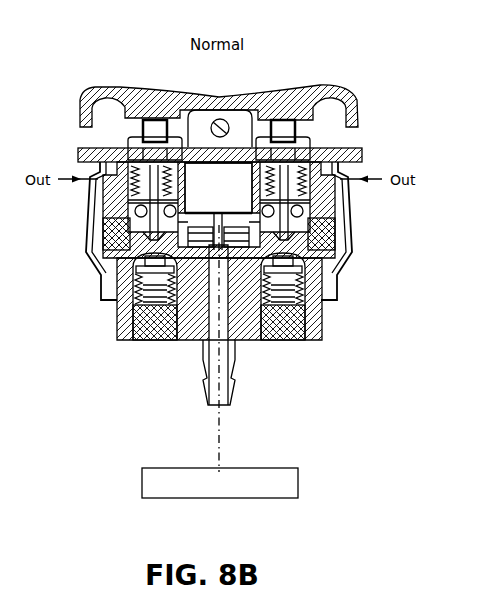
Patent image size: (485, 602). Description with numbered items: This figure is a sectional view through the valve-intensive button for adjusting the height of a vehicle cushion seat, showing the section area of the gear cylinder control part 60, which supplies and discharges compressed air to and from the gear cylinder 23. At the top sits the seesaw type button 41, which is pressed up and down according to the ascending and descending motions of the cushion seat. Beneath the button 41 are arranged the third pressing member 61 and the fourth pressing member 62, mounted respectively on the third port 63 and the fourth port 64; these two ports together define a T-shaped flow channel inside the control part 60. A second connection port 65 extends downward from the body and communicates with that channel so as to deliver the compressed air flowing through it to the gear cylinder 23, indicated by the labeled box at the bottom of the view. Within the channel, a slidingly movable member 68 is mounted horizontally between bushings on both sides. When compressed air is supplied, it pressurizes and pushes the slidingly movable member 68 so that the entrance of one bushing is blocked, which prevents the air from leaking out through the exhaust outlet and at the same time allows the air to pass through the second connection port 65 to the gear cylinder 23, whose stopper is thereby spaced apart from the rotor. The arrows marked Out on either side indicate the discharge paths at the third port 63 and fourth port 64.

The gear cylinder control part 60 is at (294, 67).
The seesaw type button 41 is at (150, 98).
The third pressing member 61 is at (143, 130).
The fourth pressing member 62 is at (295, 131).
The third port 63 is at (113, 277).
The fourth port 64 is at (333, 275).
The second connection port 65 is at (203, 370).
The slidingly movable member 68 is at (205, 213).
The gear cylinder 23 is at (220, 483).